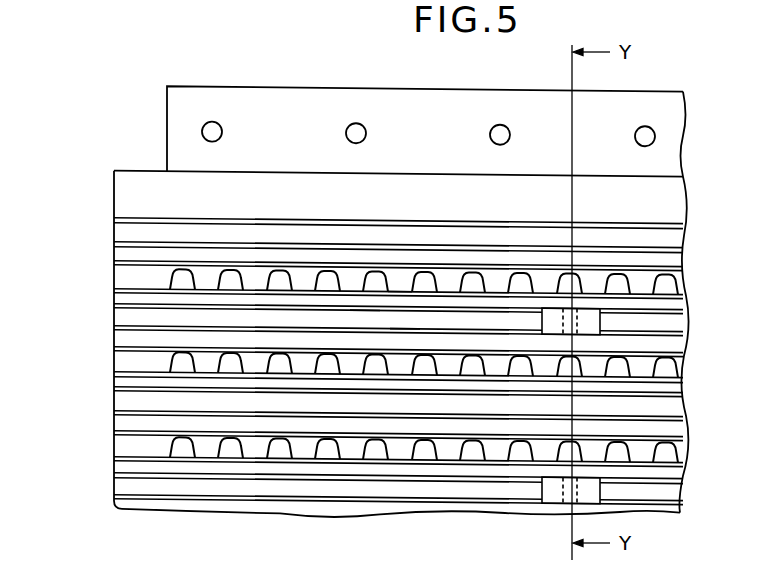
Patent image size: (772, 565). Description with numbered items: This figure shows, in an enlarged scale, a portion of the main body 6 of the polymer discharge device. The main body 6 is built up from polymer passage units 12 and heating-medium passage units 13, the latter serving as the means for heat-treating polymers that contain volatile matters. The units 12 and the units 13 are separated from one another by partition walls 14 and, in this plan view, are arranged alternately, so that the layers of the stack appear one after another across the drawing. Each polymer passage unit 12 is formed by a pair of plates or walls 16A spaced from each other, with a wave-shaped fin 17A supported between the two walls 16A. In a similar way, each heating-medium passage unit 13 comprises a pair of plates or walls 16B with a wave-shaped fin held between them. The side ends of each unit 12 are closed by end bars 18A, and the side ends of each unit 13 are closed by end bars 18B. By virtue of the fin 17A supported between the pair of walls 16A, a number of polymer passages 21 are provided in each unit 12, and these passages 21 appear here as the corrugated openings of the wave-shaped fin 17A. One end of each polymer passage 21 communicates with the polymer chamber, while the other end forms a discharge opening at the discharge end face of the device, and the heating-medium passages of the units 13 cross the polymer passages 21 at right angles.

The main body 6 is at (147, 151).
The polymer passage unit 12 is at (697, 265).
The heating-medium passage unit 13 is at (697, 222).
The partition wall 14 is at (121, 253).
The plate or wall 16A is at (323, 268).
The plate or wall 16B is at (366, 308).
The wave-shaped fin 17A is at (395, 269).
The end bar 18A is at (121, 276).
The end bar 18B is at (121, 230).
The polymer passage 21 is at (517, 281).